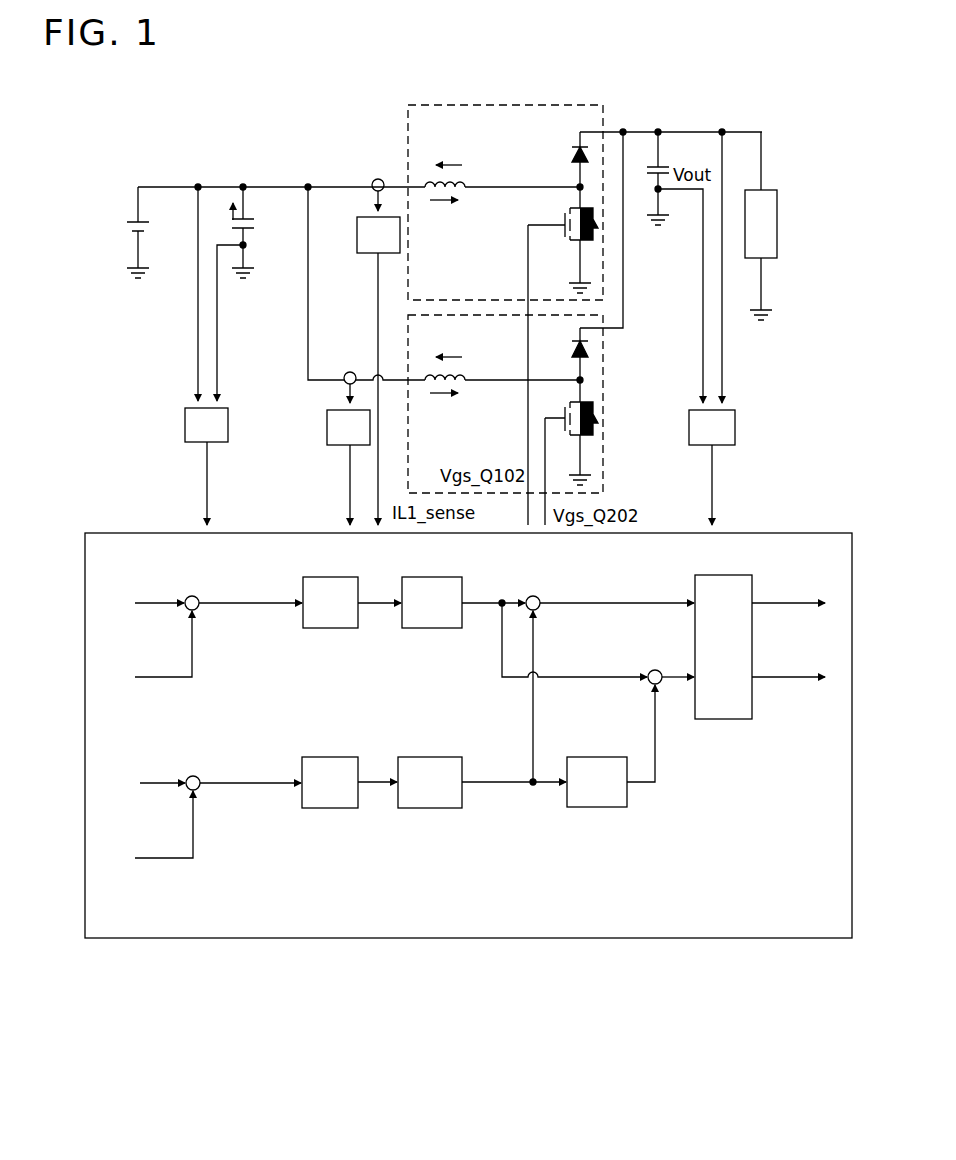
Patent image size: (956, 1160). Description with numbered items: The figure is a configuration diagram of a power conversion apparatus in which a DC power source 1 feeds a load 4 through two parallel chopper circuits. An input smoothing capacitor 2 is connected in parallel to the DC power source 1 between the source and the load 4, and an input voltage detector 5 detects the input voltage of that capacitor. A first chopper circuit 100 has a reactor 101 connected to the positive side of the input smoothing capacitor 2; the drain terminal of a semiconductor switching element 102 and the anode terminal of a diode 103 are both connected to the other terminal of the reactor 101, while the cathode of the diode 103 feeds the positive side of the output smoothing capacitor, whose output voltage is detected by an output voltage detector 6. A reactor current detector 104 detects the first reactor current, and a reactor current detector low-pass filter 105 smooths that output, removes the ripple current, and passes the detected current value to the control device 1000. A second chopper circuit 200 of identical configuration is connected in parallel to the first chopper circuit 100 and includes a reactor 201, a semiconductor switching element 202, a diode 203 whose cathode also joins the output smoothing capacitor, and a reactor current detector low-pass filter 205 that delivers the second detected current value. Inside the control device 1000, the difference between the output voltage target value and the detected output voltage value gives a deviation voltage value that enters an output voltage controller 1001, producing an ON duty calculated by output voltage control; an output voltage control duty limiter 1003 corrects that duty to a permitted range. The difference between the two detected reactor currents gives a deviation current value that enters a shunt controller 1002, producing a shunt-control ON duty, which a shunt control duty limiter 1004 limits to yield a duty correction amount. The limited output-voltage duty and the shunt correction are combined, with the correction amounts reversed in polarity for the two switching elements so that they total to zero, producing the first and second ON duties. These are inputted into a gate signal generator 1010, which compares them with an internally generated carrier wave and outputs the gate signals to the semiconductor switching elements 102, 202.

The DC power source 1 is at (128, 233).
The input smoothing capacitor 2 is at (255, 223).
The load 4 is at (778, 226).
The input voltage detector 5 is at (229, 421).
The output voltage detector 6 is at (736, 420).
The first chopper circuit 100 is at (603, 108).
The reactor 101 is at (467, 185).
The semiconductor switching element 102 is at (596, 236).
The diode 103 is at (571, 158).
The reactor current detector 104 is at (378, 179).
The reactor current detector low-pass filter 105 is at (357, 252).
The second chopper circuit 200 is at (628, 488).
The reactor 201 is at (467, 377).
The semiconductor switching element 202 is at (589, 403).
The diode 203 is at (589, 350).
The reactor current detector low-pass filter 205 is at (327, 438).
The control device 1000 is at (375, 940).
The output voltage controller 1001 is at (312, 628).
The shunt controller 1002 is at (326, 808).
The output voltage control duty limiter 1003 is at (412, 628).
The shunt control duty limiter 1004 is at (430, 808).
The gate signal generator 1010 is at (722, 719).